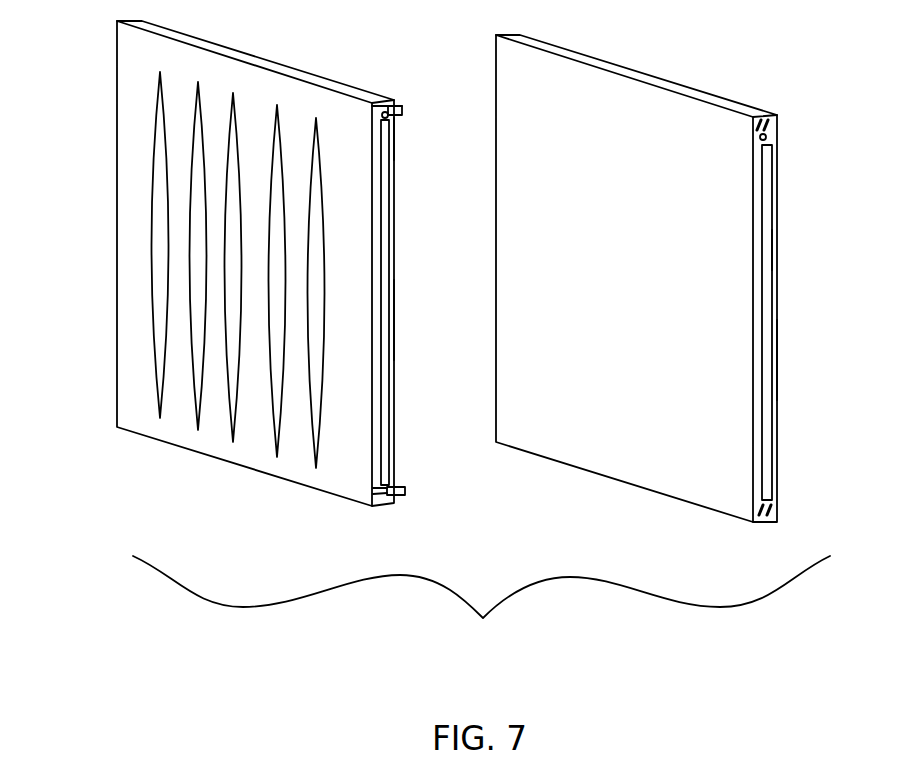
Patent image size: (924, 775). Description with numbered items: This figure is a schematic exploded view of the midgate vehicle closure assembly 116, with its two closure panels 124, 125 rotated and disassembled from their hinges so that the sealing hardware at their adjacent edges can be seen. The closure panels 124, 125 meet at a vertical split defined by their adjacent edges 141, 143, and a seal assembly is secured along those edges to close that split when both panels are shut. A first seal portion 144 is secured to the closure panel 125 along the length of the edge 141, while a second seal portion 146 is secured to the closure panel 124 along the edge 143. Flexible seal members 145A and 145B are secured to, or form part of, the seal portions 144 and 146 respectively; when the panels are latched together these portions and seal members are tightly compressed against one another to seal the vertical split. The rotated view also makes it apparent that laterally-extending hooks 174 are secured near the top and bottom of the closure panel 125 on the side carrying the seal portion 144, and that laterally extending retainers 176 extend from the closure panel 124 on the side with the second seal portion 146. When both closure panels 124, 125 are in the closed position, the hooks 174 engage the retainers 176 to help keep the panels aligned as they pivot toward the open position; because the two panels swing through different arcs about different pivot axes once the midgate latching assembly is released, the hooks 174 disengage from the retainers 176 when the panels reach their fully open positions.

The vehicle closure assembly 116 is at (481, 606).
The closure panel 124 is at (117, 65).
The closure panel 125 is at (683, 83).
The edge 141 is at (778, 355).
The edge 143 is at (395, 318).
The first seal portion 144 is at (770, 250).
The flexible seal member 145A is at (385, 195).
The flexible seal member 145B is at (764, 182).
The second seal portion 146 is at (395, 145).
The laterally-extending hooks 174 is at (778, 117).
The laterally extending retainers 176 is at (398, 105).